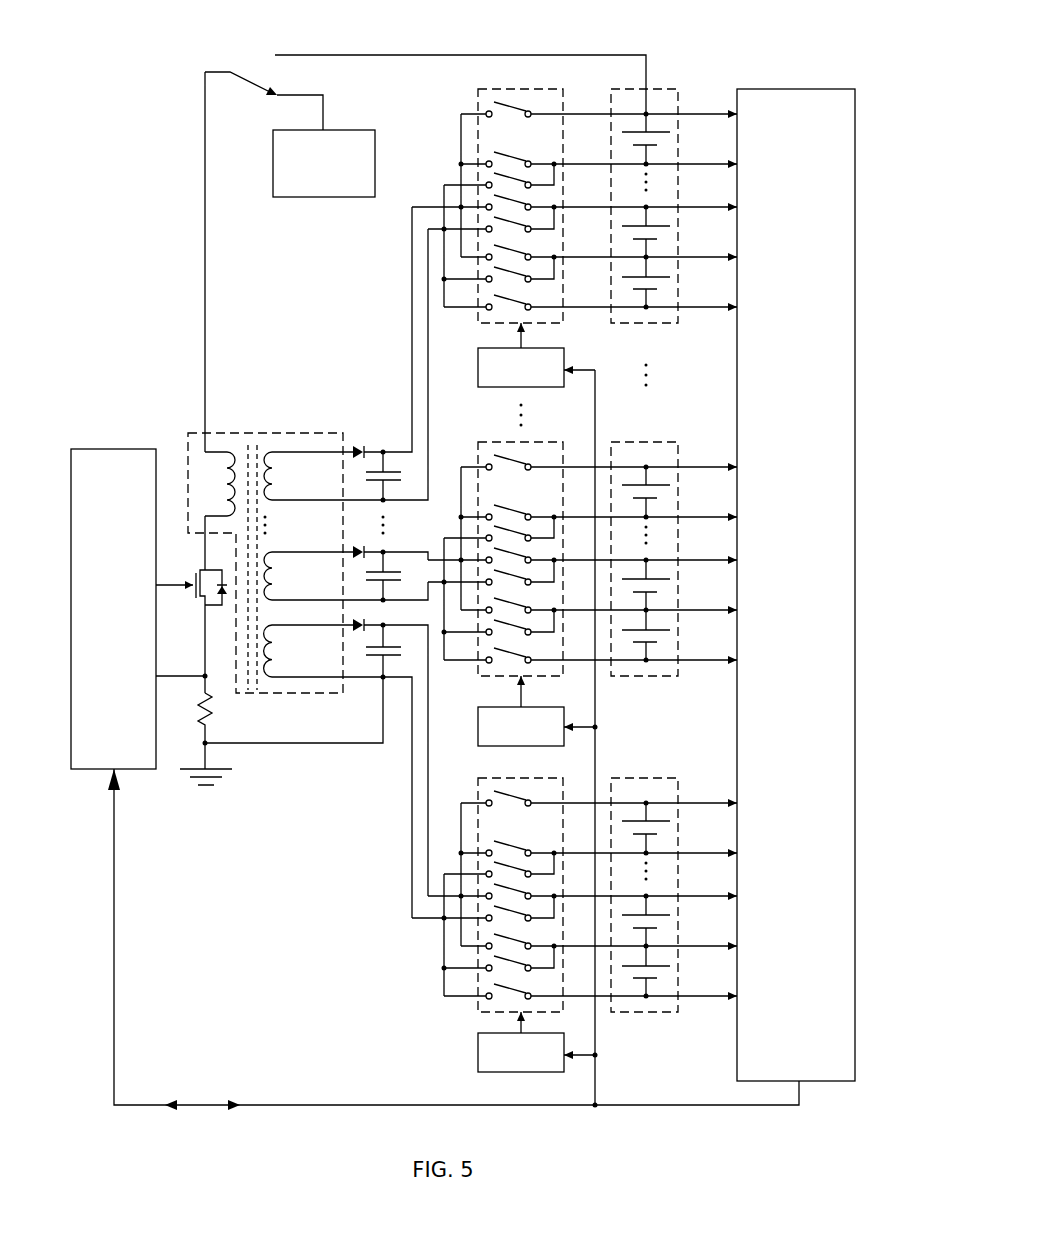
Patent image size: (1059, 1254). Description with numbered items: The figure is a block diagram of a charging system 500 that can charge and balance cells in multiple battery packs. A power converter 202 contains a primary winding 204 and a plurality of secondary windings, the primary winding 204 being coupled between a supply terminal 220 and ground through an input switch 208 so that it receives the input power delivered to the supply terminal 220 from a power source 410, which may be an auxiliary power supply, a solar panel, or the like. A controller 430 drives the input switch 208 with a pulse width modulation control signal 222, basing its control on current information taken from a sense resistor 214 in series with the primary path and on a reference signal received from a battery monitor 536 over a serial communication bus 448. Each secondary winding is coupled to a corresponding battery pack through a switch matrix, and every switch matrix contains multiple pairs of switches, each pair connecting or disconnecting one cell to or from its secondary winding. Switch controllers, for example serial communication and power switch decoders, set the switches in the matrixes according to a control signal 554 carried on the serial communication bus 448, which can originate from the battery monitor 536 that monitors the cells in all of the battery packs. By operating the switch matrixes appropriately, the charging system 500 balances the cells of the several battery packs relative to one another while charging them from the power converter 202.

The charging system 500 is at (138, 79).
The supply terminal 220 is at (204, 142).
The power source 410 is at (350, 130).
The battery monitor 536 is at (780, 89).
The control signal 554 is at (596, 1090).
The serial communication bus 448 is at (310, 1105).
The controller 430 is at (98, 621).
The power converter 202 is at (276, 433).
The primary winding 204 is at (212, 484).
The input switch 208 is at (195, 580).
The control signal 222 is at (165, 588).
The sense resistor 214 is at (210, 700).